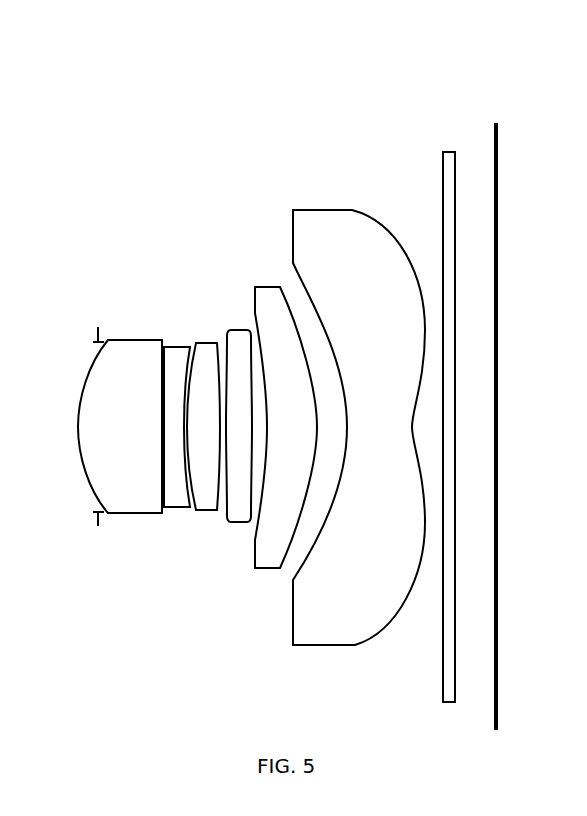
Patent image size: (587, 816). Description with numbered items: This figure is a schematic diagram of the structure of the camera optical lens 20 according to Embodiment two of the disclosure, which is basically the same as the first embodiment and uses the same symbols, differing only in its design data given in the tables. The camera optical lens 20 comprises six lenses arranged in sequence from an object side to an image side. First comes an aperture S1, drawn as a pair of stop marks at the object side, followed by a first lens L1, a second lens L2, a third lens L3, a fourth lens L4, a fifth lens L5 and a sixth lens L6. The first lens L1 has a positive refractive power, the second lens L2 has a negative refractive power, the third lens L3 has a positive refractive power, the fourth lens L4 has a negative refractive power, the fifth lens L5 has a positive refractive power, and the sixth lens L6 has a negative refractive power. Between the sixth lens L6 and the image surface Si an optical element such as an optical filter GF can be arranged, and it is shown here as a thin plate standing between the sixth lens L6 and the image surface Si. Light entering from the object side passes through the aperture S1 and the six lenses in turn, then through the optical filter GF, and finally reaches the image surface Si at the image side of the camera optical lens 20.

The camera optical lens 20 is at (307, 70).
The aperture S1 is at (78, 413).
The first lens L1 is at (120, 414).
The second lens L2 is at (175, 413).
The third lens L3 is at (203, 414).
The fourth lens L4 is at (239, 411).
The fifth lens L5 is at (283, 413).
The sixth lens L6 is at (359, 412).
The optical filter GF is at (452, 410).
The image surface Si is at (503, 413).